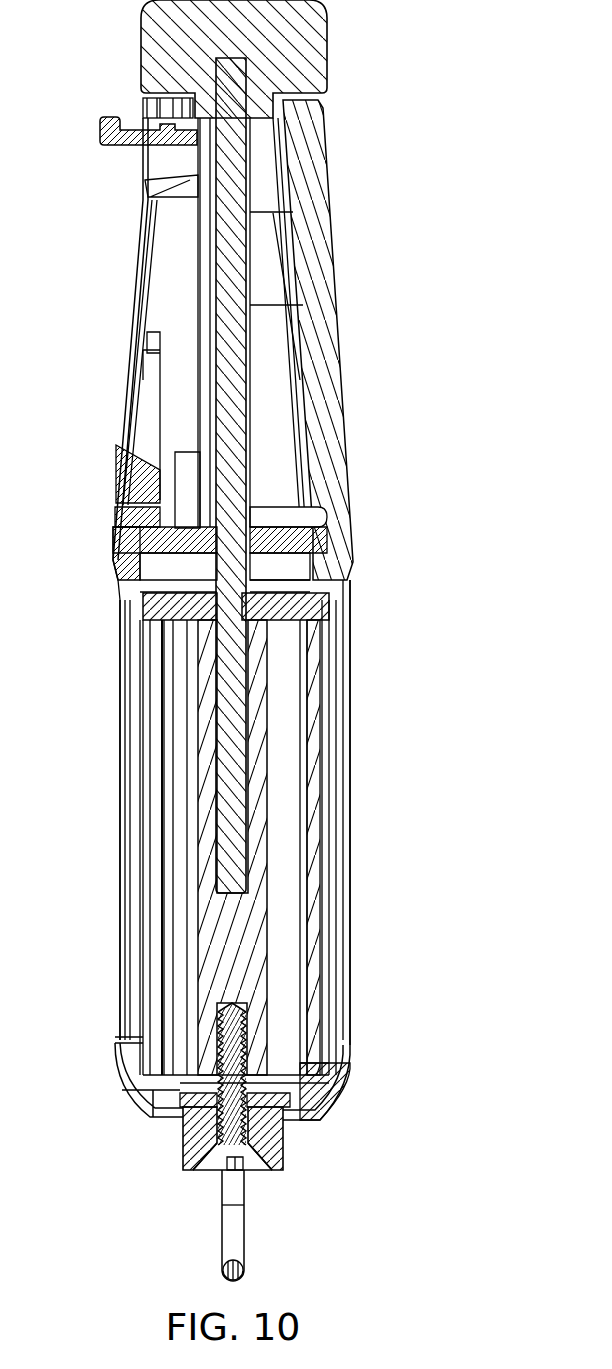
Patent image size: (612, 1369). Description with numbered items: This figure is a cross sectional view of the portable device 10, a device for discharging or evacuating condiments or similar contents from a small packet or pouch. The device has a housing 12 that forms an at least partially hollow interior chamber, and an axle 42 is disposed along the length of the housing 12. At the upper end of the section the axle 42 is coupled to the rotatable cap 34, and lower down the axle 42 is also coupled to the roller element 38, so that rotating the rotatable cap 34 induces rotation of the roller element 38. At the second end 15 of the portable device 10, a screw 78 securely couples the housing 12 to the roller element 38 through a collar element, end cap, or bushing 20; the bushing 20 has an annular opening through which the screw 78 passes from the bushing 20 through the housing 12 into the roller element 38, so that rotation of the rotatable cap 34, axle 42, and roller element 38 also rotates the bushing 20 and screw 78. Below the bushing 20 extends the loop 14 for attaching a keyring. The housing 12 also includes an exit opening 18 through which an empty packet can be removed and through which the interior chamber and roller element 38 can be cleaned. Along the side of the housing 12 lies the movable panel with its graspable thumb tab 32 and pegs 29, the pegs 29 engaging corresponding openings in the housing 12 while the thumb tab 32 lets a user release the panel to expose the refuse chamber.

The portable device 10 is at (243, 640).
The housing 12 is at (340, 485).
The loop 14 is at (237, 1233).
The second end 15 is at (262, 930).
The exit opening 18 is at (348, 790).
The bushing 20 is at (190, 1146).
The pegs 29 is at (170, 332).
The graspable thumb tab 32 is at (100, 131).
The rotatable cap 34 is at (150, 33).
The roller element 38 is at (233, 960).
The axle 42 is at (228, 677).
The screw 78 is at (200, 1168).